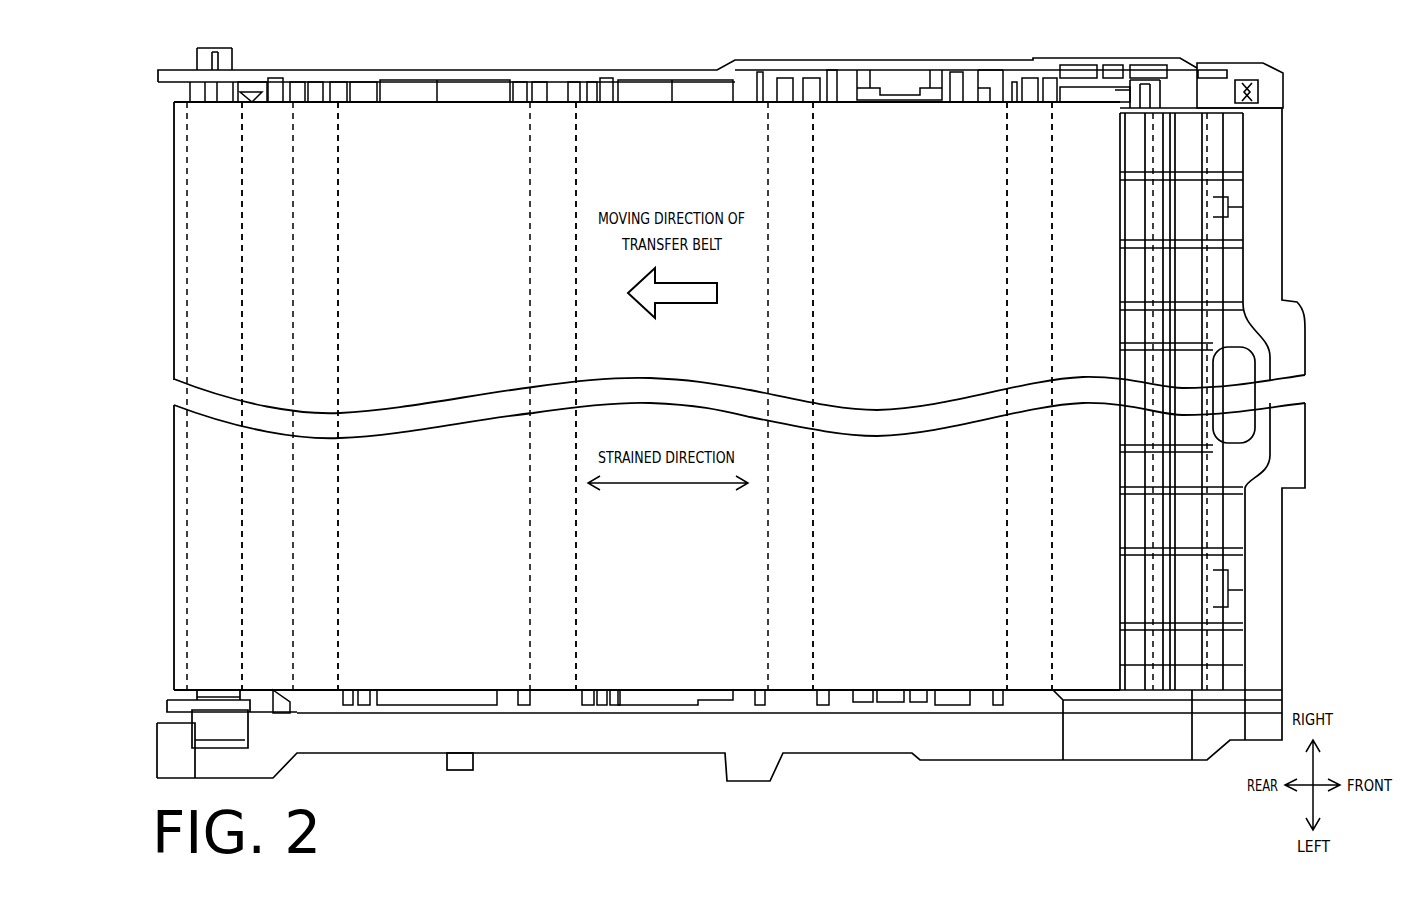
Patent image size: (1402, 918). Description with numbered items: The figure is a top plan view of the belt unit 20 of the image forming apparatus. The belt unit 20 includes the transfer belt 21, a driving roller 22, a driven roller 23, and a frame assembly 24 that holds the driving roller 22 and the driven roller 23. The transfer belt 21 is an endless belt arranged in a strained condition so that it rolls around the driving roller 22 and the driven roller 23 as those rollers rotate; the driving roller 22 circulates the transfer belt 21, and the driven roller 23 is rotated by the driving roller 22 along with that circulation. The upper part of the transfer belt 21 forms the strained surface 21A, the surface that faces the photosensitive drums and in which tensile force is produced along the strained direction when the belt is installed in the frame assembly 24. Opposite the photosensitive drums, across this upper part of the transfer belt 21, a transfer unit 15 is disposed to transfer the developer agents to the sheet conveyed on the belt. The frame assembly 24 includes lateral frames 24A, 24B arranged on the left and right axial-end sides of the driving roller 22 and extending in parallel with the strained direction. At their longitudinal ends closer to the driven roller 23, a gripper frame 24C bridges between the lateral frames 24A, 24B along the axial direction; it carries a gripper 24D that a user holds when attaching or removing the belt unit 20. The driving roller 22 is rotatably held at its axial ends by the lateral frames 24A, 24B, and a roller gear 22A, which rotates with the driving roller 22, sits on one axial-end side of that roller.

The belt unit 20 is at (158, 210).
The transfer belt 21 is at (432, 205).
The strained surface 21A is at (968, 673).
The driving roller 22 is at (243, 137).
The roller gear 22A is at (205, 730).
The driven roller 23 is at (1210, 133).
The transfer unit 15 is at (340, 137).
The frame assembly 24 is at (655, 698).
The lateral frame 24A is at (582, 742).
The lateral frame 24B is at (670, 75).
The gripper frame 24C is at (1260, 640).
The gripper 24D is at (1262, 430).